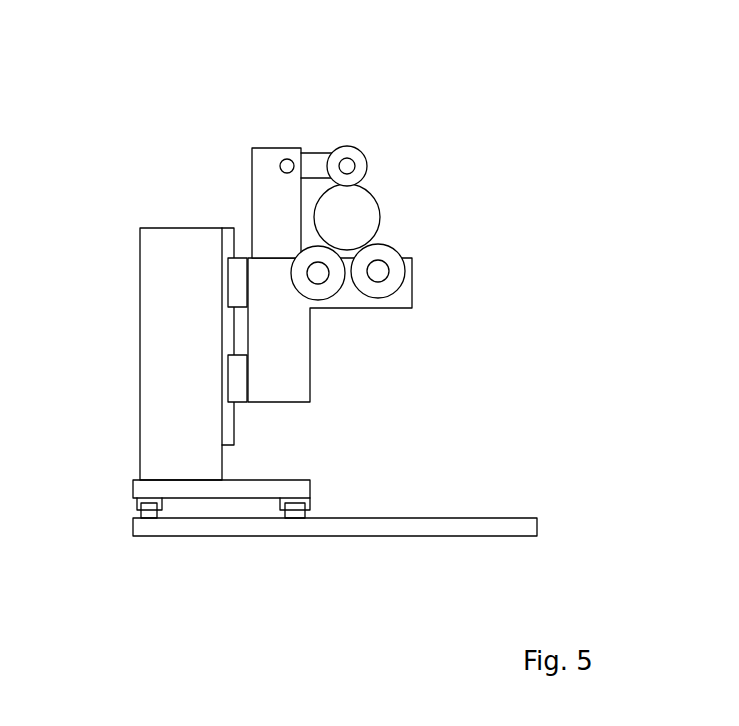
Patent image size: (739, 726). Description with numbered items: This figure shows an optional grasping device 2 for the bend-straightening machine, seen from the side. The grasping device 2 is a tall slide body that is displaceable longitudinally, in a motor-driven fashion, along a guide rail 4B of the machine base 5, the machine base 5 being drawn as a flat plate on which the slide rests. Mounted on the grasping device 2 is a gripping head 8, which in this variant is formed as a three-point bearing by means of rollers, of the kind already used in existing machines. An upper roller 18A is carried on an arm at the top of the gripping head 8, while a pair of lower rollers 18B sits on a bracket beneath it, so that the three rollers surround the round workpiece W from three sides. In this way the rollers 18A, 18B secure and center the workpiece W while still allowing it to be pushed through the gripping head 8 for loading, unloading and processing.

The grasping device 2 is at (153, 315).
The guide rail 4B is at (121, 509).
The machine base 5 is at (515, 527).
The gripping head 8 is at (374, 137).
The clamping jaw 18A is at (367, 163).
The clamping jaw 18B is at (350, 292).
The workpiece W is at (379, 204).